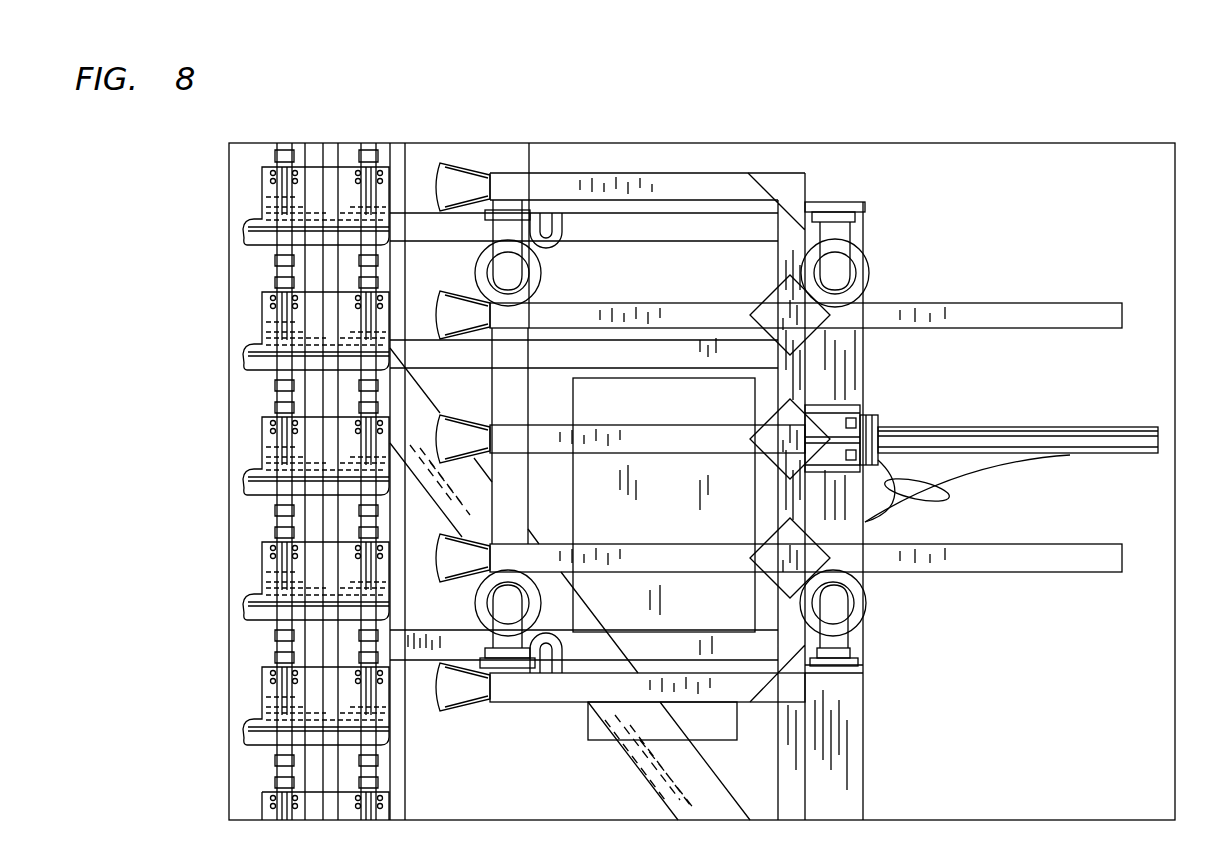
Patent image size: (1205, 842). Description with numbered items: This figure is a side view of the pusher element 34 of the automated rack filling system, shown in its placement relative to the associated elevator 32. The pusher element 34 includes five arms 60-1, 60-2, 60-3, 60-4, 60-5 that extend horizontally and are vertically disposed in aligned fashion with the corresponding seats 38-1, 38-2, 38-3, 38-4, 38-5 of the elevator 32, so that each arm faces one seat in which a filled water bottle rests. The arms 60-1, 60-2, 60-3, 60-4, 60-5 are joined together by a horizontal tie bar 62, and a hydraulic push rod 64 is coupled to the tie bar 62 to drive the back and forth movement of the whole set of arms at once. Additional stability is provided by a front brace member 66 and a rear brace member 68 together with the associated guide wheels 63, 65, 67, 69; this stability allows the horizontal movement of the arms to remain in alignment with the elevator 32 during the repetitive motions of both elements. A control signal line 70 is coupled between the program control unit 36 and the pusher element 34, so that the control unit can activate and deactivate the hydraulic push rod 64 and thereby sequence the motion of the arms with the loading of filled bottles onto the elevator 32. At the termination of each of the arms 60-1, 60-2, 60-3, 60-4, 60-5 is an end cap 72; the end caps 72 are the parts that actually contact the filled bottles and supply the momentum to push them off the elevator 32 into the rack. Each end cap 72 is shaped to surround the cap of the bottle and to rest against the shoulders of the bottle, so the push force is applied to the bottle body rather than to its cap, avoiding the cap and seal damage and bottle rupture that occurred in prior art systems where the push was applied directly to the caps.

The elevator 32 is at (330, 130).
The pusher element 34 is at (1022, 131).
The program control unit 36 is at (672, 488).
The seat 38-1 is at (300, 200).
The seat 38-2 is at (300, 324).
The seat 38-3 is at (300, 448).
The seat 38-4 is at (300, 573).
The seat 38-5 is at (300, 696).
The arm 60-1 is at (642, 188).
The arm 60-2 is at (645, 311).
The arm 60-3 is at (666, 440).
The arm 60-4 is at (670, 570).
The arm 60-5 is at (558, 694).
The horizontal tie bar 62 is at (790, 190).
The guide wheel 63 is at (543, 269).
The hydraulic push rod 64 is at (921, 432).
The guide wheel 65 is at (478, 604).
The front brace member 66 is at (505, 494).
The guide wheel 67 is at (870, 269).
The rear brace member 68 is at (845, 533).
The guide wheel 69 is at (870, 600).
The control signal line 70 is at (935, 494).
The end cap 72 is at (463, 198).